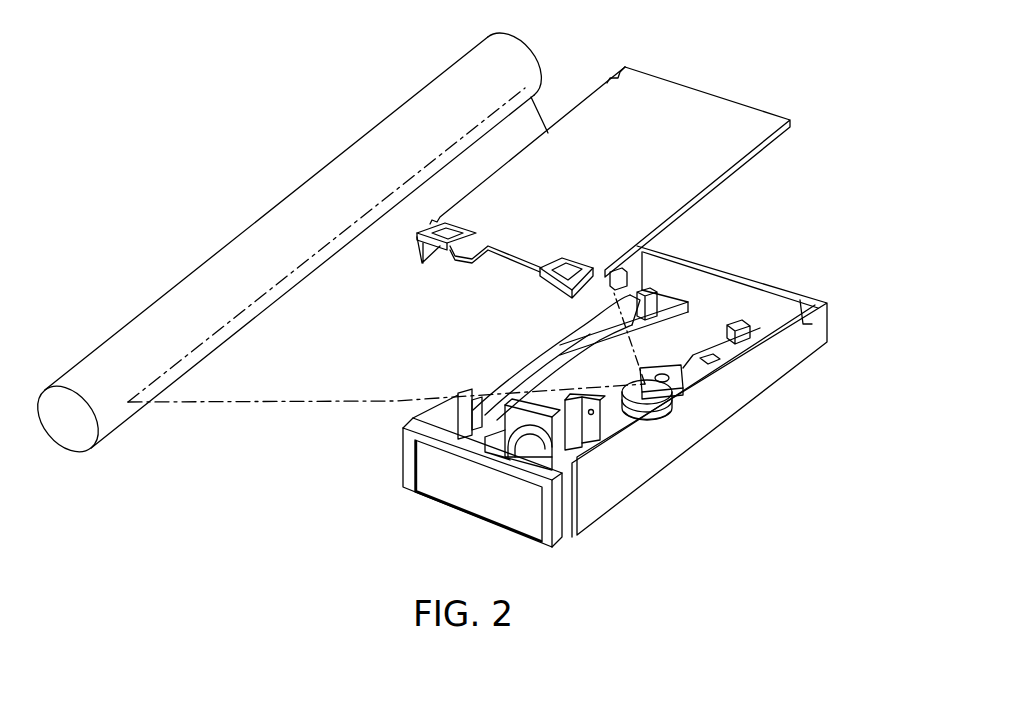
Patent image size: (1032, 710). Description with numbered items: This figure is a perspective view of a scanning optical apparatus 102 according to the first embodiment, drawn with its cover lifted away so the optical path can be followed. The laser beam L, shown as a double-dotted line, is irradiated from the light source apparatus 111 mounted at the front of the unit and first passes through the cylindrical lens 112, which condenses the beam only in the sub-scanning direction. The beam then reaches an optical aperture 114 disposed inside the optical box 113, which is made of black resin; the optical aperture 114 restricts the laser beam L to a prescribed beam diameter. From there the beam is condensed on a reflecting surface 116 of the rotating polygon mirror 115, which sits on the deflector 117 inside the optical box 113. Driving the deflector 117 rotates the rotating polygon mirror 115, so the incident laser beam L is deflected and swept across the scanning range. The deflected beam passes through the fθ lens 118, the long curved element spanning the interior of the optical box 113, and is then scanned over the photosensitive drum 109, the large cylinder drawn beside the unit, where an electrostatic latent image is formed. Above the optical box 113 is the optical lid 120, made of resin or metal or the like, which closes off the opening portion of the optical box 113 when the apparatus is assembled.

The optical sensor unit 102 is at (770, 262).
The photosensitive drum 109 is at (192, 288).
The light source apparatus 111 is at (405, 465).
The cylindrical lens 112 is at (578, 432).
The optical box 113 is at (795, 345).
The optical aperture 114 is at (590, 412).
The rotating polygon mirror 115 is at (683, 372).
The reflecting surface 116 is at (672, 400).
The deflector 117 is at (708, 348).
The fθ lens 118 is at (523, 376).
The optical lid 120 is at (698, 108).
The laser beam L is at (622, 383).